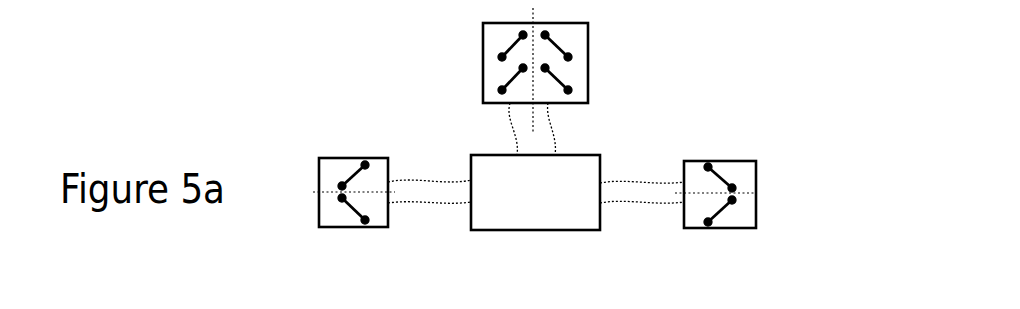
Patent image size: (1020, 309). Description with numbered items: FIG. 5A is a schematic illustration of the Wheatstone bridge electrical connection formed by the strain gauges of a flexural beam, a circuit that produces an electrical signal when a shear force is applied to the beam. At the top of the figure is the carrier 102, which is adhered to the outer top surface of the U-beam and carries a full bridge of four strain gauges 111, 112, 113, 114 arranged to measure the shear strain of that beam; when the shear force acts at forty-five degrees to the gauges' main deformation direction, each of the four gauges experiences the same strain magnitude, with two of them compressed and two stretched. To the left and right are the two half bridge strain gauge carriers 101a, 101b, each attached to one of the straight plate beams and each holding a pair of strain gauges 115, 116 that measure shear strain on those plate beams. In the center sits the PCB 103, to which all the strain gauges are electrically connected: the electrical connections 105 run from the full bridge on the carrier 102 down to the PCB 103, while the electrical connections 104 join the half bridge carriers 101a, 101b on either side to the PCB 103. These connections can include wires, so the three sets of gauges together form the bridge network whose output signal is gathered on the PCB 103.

The half bridge strain gauge carrier 101a is at (377, 155).
The half bridge strain gauge carrier 101b is at (702, 212).
The carrier 102 is at (510, 103).
The PCB 103 is at (517, 212).
The electrical connections 104 is at (450, 185).
The electrical connections 105 is at (545, 138).
The strain gauge 111 is at (513, 77).
The strain gauge 112 is at (513, 43).
The strain gauge 113 is at (563, 72).
The strain gauge 114 is at (569, 42).
The strain gauge 115 is at (350, 208).
The strain gauge 116 is at (347, 167).